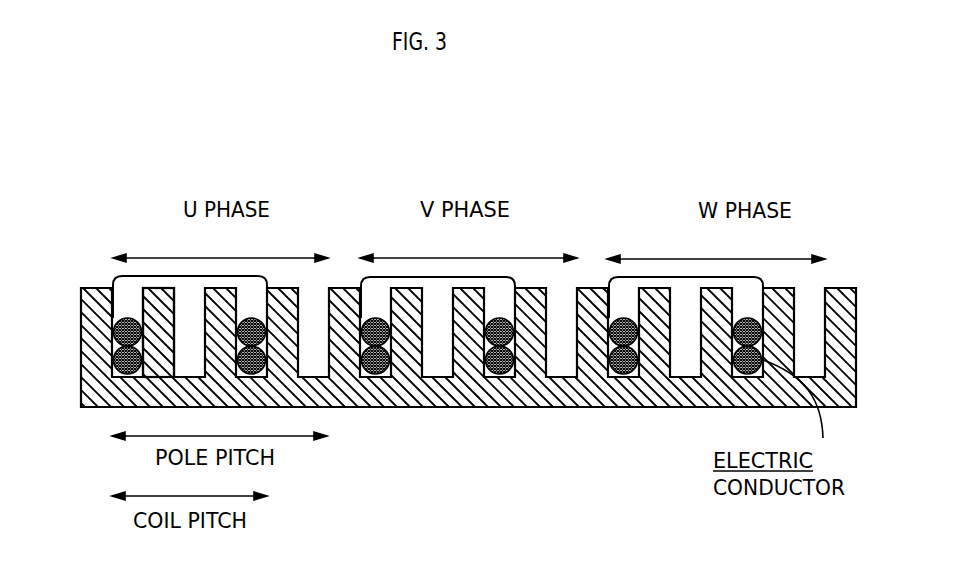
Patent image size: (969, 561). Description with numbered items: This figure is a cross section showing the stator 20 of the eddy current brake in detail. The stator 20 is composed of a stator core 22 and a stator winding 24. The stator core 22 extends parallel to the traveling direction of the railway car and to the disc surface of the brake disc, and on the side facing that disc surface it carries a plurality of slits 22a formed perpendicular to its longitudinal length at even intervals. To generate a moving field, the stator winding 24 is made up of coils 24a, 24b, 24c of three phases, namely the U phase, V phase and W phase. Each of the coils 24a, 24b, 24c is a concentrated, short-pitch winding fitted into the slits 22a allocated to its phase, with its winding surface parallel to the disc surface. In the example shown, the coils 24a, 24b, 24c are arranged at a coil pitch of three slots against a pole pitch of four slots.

The stator 20 is at (667, 224).
The stator core 22 is at (827, 288).
The slits 22a is at (182, 333).
The stator winding 24 is at (128, 373).
The U phase coil 24a is at (190, 275).
The V phase coil 24b is at (437, 276).
The W phase coil 24c is at (685, 277).